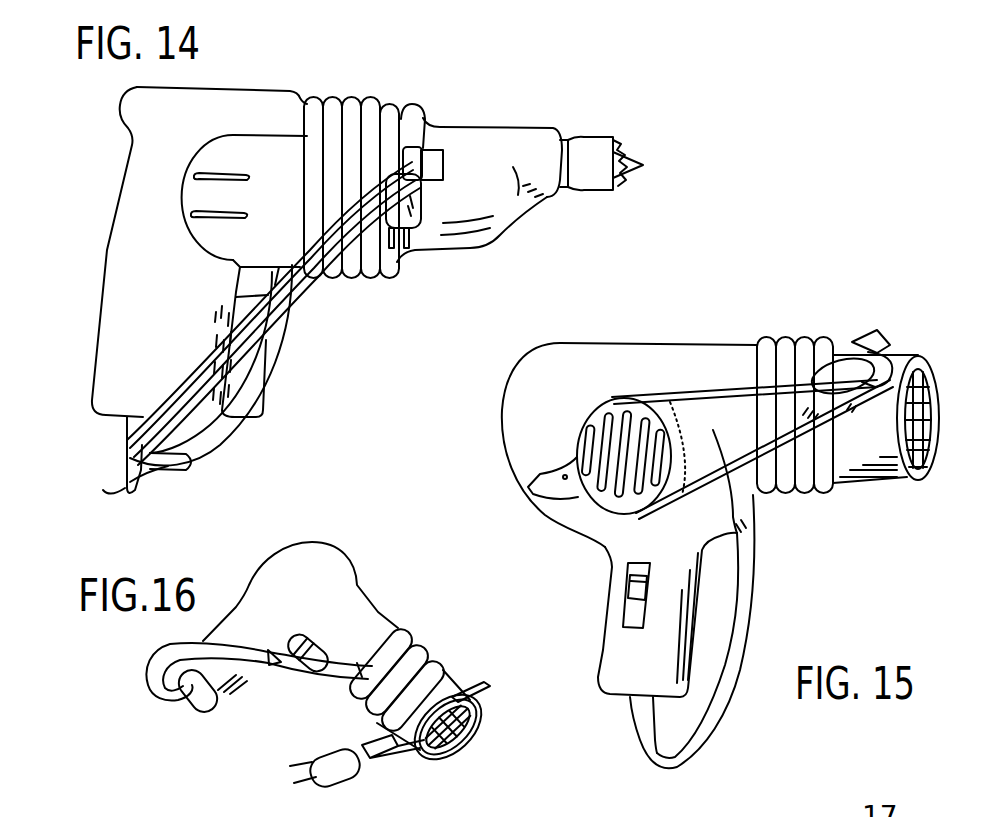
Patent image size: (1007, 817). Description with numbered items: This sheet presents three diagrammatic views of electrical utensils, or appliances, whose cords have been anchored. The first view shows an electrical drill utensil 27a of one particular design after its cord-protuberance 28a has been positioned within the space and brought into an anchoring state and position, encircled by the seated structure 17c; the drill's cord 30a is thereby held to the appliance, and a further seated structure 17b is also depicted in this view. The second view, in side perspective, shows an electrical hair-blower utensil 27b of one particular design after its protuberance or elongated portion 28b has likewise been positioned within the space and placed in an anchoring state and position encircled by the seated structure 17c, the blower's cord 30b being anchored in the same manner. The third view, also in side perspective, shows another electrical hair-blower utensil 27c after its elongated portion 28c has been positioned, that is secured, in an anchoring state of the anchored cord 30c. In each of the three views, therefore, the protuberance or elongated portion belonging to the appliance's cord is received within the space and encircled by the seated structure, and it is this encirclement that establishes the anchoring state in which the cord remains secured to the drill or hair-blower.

In FIG. 14, the electrical drill utensil 27a is at (481, 140).
In FIG. 14, the power cord 30a is at (288, 358).
In FIG. 14, the plug connector 17b is at (200, 453).
In FIG. 14, the cord-protuberance 28a is at (126, 470).
In FIG. 15, the electrical hair-blower utensil 27b is at (637, 357).
In FIG. 15, the power cord 30b is at (740, 612).
In FIG. 15, the seated structure 17c is at (710, 397).
In FIG. 16, the seated structure 17c is at (460, 693).
In FIG. 15, the protuberance or elongated portion 28b is at (620, 504).
In FIG. 16, the electrical hair-blower utensil 27c is at (320, 575).
In FIG. 16, the anchored cord 30c is at (433, 637).
In FIG. 16, the elongated portion 28c is at (458, 750).